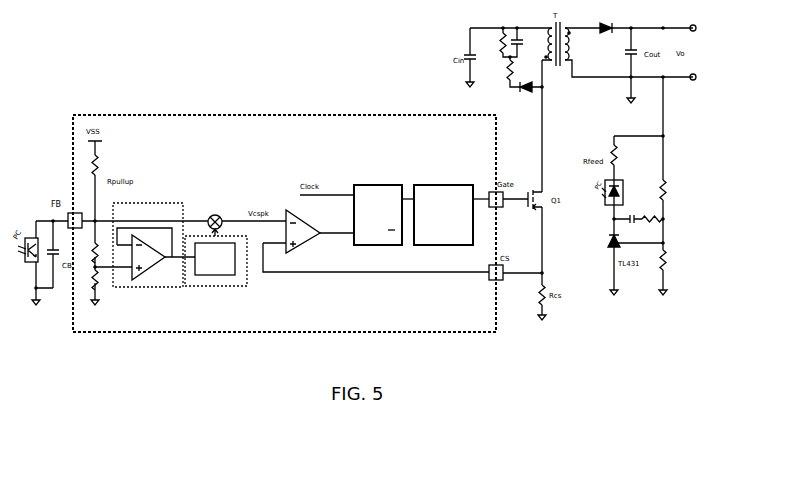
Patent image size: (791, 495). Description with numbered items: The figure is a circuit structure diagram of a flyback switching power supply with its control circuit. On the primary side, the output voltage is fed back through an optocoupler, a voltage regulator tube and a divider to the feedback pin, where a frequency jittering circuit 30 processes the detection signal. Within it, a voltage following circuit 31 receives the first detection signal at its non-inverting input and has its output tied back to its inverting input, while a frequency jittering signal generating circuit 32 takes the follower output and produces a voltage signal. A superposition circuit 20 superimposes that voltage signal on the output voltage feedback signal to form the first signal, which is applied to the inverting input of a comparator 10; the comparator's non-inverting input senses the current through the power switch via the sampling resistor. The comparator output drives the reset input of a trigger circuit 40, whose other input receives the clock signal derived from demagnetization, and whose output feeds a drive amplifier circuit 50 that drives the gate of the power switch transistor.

The comparator 10 is at (310, 226).
The superposition circuit 20 is at (222, 214).
The frequency jittering circuit 30 is at (145, 239).
The voltage following circuit 31 is at (156, 273).
The frequency jittering signal generating circuit 32 is at (222, 286).
The trigger circuit 40 is at (391, 185).
The drive amplifier circuit 50 is at (432, 186).